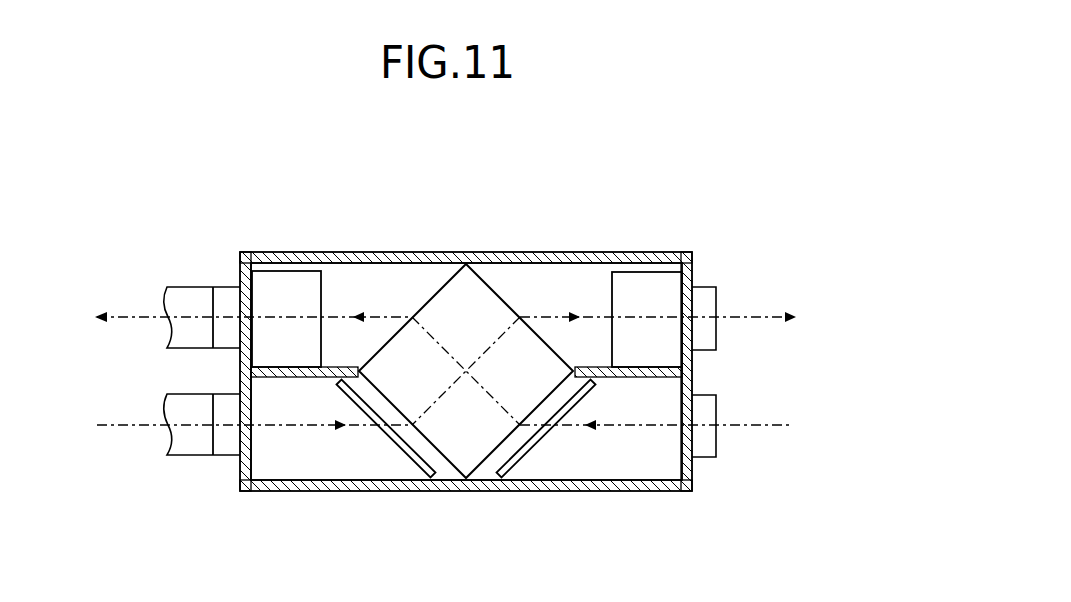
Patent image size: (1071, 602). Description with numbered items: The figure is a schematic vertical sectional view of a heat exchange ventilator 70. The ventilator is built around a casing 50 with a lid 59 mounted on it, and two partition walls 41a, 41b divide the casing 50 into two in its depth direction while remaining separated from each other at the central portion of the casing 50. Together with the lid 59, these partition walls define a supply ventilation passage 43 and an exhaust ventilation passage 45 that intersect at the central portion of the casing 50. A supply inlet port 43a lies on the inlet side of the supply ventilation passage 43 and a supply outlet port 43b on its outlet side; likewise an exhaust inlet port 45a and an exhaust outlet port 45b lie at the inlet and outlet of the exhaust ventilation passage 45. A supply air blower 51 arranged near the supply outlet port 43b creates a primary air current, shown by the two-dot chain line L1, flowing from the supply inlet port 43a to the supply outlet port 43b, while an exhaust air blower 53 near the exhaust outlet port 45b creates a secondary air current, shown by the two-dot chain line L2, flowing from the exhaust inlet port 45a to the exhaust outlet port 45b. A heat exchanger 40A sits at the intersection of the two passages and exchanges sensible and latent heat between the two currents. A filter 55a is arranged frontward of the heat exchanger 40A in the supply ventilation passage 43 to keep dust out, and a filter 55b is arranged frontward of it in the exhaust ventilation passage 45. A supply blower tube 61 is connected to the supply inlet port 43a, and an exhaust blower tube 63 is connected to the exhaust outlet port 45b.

The heat exchange ventilator 70 is at (696, 186).
The lid 59 is at (524, 259).
The casing 50 is at (290, 486).
The partition wall 41a is at (250, 366).
The partition wall 41b is at (682, 362).
The supply ventilation passage 43 is at (578, 290).
The exhaust ventilation passage 45 is at (348, 284).
The exhaust air blower 53 is at (290, 285).
The supply air blower 51 is at (637, 290).
The heat exchanger 40A is at (430, 290).
The filter 55a is at (398, 452).
The filter 55b is at (534, 452).
The exhaust blower tube 63 is at (172, 297).
The exhaust outlet port 45b is at (222, 297).
The supply blower tube 61 is at (163, 458).
The supply inlet port 43a is at (223, 458).
The supply outlet port 43b is at (708, 298).
The exhaust inlet port 45a is at (700, 452).
The two-dot chain line L1 is at (790, 314).
The two-dot chain line L2 is at (100, 314).